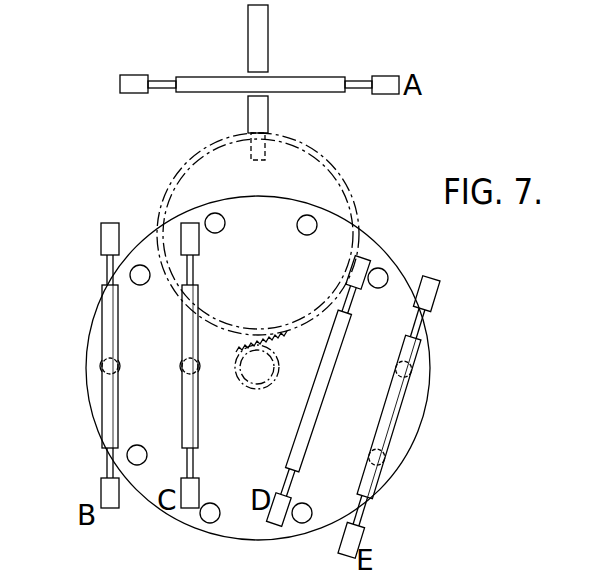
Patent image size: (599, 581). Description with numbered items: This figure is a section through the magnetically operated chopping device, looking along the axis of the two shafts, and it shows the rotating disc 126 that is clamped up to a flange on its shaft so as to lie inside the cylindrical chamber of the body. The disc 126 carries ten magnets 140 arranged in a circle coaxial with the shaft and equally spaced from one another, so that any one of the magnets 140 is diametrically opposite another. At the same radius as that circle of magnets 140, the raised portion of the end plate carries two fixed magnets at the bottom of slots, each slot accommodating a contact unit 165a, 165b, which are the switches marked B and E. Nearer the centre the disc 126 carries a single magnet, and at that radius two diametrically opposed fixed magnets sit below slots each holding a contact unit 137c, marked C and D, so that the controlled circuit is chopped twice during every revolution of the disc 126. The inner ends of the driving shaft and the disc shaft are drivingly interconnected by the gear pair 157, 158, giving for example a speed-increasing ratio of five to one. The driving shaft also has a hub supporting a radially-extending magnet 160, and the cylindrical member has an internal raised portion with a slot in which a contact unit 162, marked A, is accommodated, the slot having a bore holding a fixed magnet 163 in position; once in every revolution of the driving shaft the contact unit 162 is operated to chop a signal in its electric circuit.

The disc 126 is at (361, 241).
The contact unit 137c is at (189, 414).
The magnets 140 is at (218, 233).
The gear 157 is at (329, 166).
The gear 158 is at (260, 390).
The radially-extending magnet 160 is at (258, 110).
The contact unit 162 is at (302, 78).
The fixed magnet 163 is at (249, 26).
The contact unit 165a is at (108, 312).
The contact unit 165b is at (391, 423).